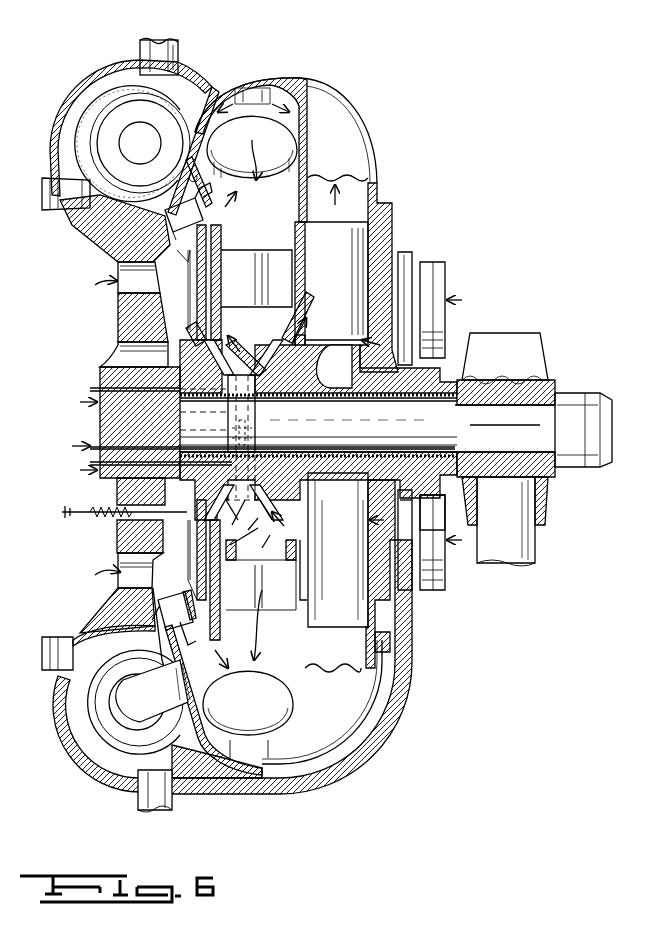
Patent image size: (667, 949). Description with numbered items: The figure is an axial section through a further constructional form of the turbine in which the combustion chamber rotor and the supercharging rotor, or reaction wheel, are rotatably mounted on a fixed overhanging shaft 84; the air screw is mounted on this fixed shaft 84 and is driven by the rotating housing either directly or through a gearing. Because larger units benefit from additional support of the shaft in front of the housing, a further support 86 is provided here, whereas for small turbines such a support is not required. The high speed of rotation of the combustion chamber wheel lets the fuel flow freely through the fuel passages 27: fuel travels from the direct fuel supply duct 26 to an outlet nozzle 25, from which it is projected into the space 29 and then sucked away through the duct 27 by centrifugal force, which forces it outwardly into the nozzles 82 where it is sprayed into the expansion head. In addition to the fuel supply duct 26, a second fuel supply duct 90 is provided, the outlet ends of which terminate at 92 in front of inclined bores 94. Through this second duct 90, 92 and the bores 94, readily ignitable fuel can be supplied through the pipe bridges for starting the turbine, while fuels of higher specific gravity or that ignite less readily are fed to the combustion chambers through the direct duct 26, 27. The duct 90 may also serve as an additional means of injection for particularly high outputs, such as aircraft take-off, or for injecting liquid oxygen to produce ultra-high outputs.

The nozzles 82 is at (212, 226).
The fuel passages 27 is at (203, 300).
The space 29 is at (226, 322).
The inclined bores 94 is at (298, 315).
The outlet ends of second fuel supply duct 92 is at (262, 352).
The fuel supply duct 26 is at (93, 393).
The outlet nozzle 25 is at (232, 405).
The second fuel supply duct 90 is at (100, 448).
The fixed shaft 84 is at (522, 433).
The shaft support 86 is at (428, 505).